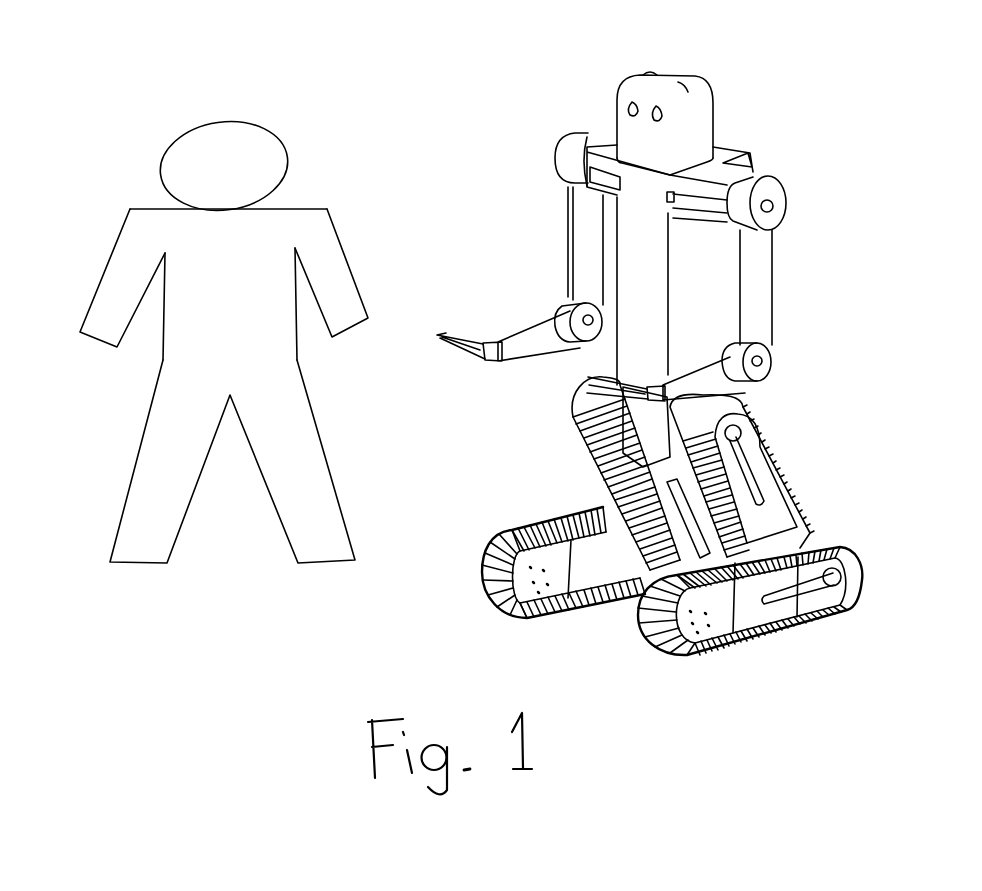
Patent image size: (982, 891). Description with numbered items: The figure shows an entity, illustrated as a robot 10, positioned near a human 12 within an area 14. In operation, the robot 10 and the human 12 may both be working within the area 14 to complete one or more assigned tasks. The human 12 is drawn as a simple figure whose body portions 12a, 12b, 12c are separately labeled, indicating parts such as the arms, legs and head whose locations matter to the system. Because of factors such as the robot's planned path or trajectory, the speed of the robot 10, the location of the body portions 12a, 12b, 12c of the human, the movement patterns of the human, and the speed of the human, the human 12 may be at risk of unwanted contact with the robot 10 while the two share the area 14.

The robot 10 is at (710, 85).
The human 12 is at (234, 319).
The body portion 12a is at (103, 277).
The body portion 12b is at (133, 467).
The body portion 12c is at (187, 132).
The area 14 is at (557, 82).